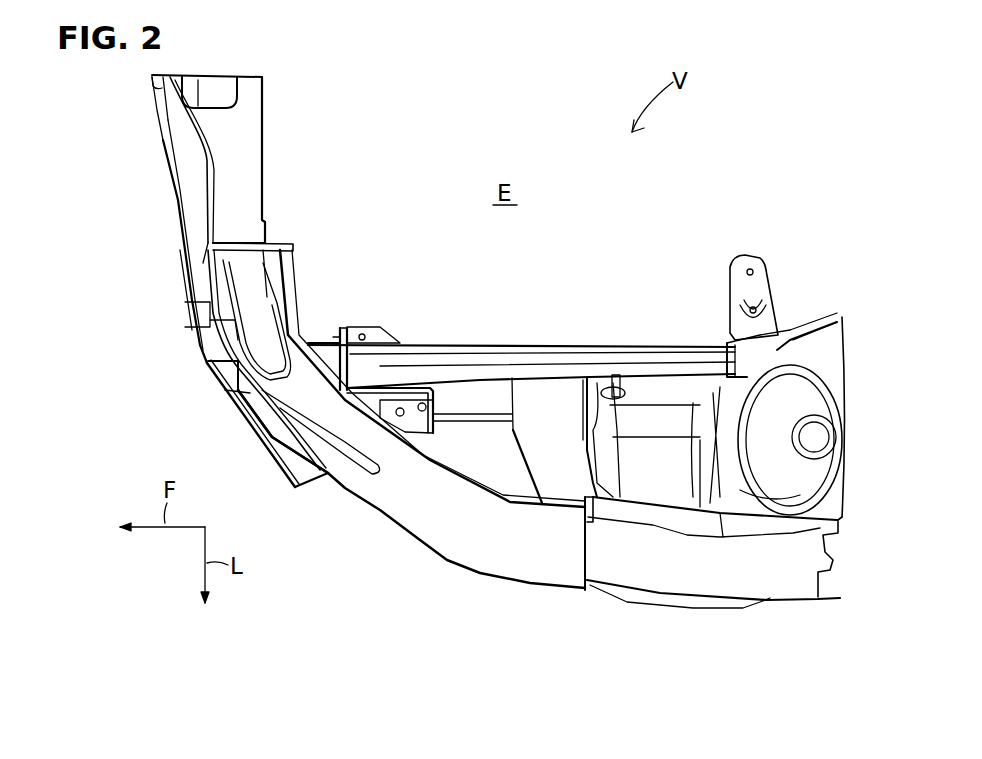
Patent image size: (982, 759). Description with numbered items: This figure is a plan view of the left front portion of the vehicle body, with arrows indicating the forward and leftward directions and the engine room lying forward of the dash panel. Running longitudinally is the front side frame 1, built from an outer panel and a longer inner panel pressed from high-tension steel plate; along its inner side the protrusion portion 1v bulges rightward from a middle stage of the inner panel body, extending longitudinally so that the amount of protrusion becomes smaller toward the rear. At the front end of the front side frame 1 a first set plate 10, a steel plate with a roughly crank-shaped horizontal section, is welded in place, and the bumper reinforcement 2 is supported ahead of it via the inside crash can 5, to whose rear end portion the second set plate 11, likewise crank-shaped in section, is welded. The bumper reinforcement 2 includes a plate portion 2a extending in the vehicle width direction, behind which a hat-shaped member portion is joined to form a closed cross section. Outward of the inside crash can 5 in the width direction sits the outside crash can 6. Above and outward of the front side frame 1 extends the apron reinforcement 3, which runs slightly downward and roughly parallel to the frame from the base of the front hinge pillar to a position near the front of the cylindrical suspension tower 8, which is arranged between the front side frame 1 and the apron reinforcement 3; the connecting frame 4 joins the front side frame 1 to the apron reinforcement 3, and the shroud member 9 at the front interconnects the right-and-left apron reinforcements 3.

The front side frame 1 is at (600, 333).
The protrusion portion 1v is at (463, 343).
The bumper reinforcement 2 is at (168, 192).
The plate portion 2a is at (192, 277).
The apron reinforcement 3 is at (792, 602).
The connecting frame 4 is at (515, 433).
The inside crash can 5 is at (325, 342).
The outside crash can 6 is at (328, 474).
The suspension tower 8 is at (808, 387).
The shroud member 9 is at (248, 112).
The first set plate 10 is at (352, 350).
The second set plate 11 is at (335, 378).